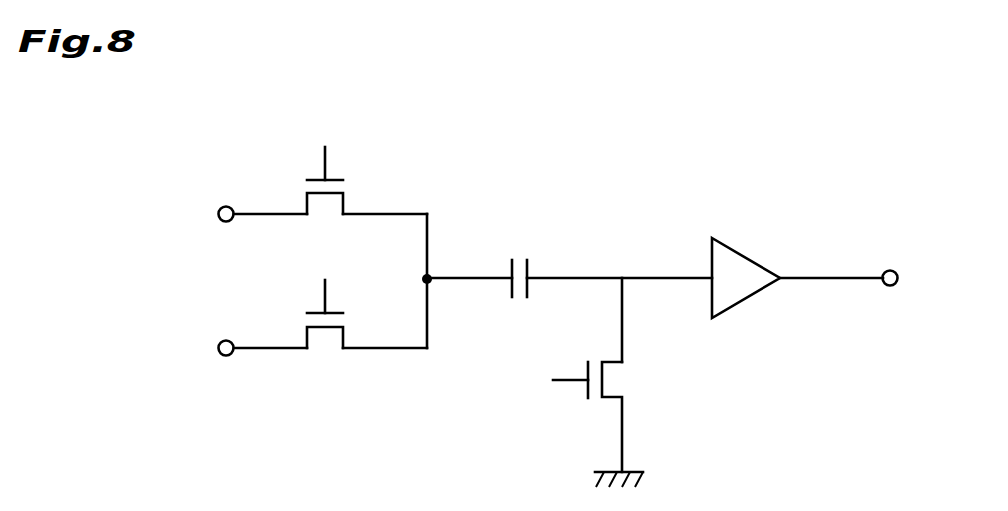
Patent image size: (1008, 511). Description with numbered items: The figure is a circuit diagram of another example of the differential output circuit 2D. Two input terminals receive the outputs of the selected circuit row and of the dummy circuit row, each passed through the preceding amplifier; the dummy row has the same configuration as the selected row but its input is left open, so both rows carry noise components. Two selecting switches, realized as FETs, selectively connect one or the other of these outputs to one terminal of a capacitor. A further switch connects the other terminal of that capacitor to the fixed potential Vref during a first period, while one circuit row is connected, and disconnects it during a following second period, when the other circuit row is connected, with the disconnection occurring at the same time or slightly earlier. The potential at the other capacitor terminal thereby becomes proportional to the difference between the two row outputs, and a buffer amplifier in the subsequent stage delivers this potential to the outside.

The differential output circuit 2D is at (756, 181).
The fixed potential Vref is at (632, 472).